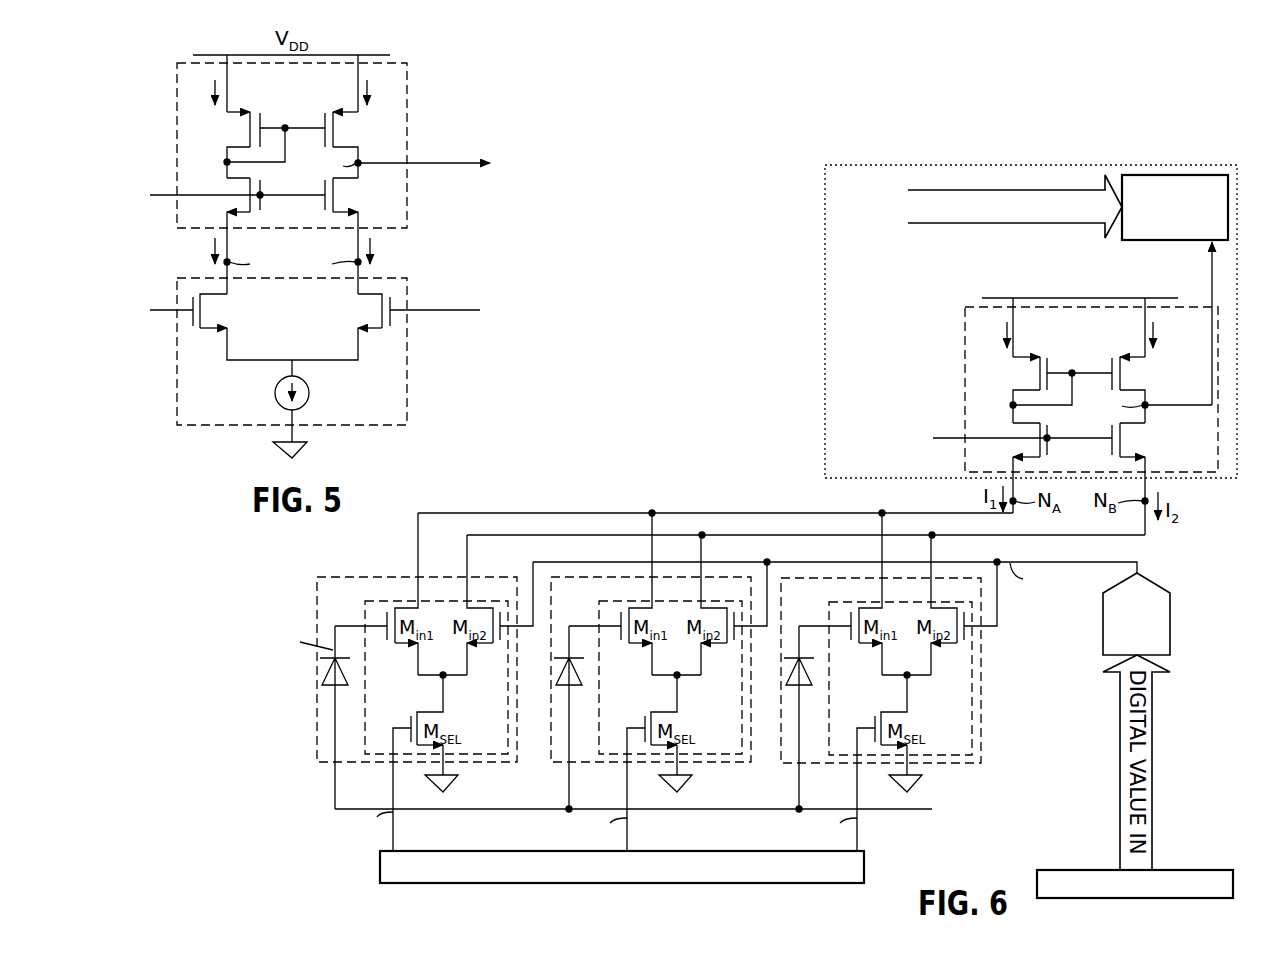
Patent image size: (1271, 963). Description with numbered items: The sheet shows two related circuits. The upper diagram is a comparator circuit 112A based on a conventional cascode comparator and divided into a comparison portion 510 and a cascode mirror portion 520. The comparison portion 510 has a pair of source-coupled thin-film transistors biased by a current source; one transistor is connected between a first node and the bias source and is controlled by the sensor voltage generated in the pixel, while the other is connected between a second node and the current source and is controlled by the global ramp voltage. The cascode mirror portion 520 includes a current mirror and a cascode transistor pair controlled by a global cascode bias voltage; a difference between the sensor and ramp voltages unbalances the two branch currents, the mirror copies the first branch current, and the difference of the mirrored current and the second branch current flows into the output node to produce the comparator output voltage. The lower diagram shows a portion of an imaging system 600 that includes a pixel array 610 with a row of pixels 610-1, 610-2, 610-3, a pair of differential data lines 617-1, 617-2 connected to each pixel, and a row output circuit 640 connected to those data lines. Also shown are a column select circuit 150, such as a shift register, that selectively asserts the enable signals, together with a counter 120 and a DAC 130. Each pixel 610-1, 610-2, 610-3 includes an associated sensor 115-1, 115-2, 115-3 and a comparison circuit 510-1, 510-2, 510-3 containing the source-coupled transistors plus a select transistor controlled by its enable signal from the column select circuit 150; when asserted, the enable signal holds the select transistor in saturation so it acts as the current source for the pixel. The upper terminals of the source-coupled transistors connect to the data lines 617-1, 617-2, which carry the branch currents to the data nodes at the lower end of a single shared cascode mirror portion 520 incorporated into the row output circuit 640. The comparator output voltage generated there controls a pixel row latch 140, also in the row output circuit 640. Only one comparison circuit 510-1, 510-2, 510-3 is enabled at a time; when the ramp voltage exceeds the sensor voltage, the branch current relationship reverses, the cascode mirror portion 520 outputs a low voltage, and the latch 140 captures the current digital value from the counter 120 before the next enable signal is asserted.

In FIG. 5, the comparator circuit 112A is at (478, 111).
In FIG. 5, the cascode mirror portion 520 is at (325, 174).
In FIG. 6, the cascode mirror portion 520 is at (1034, 385).
In FIG. 5, the comparison portion 510 is at (302, 348).
In FIG. 6, the imaging system 600 is at (822, 150).
In FIG. 6, the row output circuit 640 is at (1031, 321).
In FIG. 6, the pixel row latch 140 is at (1175, 207).
In FIG. 6, the pixel array 610 is at (685, 498).
In FIG. 6, the differential data line 617-1 is at (534, 512).
In FIG. 6, the differential data line 617-2 is at (548, 536).
In FIG. 6, the pixel 610-1 is at (386, 682).
In FIG. 6, the pixel 610-2 is at (636, 682).
In FIG. 6, the pixel 610-3 is at (868, 682).
In FIG. 6, the comparison circuit 510-1 is at (434, 682).
In FIG. 6, the comparison circuit 510-2 is at (668, 682).
In FIG. 6, the comparison circuit 510-3 is at (898, 682).
In FIG. 6, the sensor 115-1 is at (322, 680).
In FIG. 6, the sensor 115-2 is at (563, 687).
In FIG. 6, the sensor 115-3 is at (788, 687).
In FIG. 6, the column select circuit 150 is at (622, 867).
In FIG. 6, the DAC 130 is at (1136, 614).
In FIG. 6, the counter 120 is at (1135, 884).